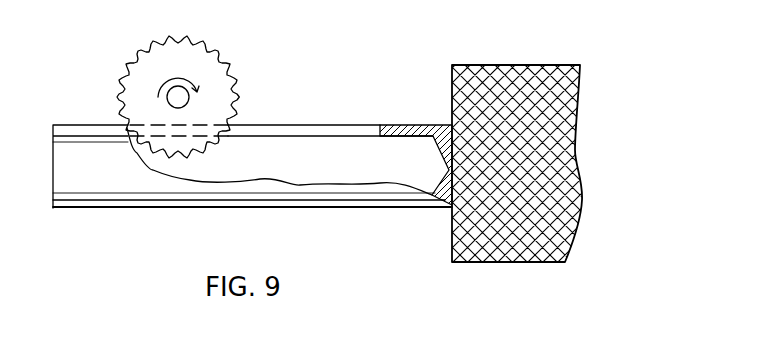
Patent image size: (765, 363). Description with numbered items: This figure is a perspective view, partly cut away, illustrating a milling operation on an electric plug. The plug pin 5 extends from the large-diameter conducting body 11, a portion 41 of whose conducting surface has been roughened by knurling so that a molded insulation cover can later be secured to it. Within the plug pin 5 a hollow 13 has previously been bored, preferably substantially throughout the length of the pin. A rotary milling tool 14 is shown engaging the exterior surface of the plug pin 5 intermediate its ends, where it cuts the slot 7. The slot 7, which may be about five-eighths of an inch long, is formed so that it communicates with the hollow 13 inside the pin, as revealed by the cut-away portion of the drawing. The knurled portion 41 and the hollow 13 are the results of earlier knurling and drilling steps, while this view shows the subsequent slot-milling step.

The milling tool 14 is at (212, 62).
The slot 7 is at (342, 130).
The plug pin 5 is at (347, 208).
The hollow 13 is at (419, 148).
The conducting body 11 is at (537, 65).
The roughened portion 41 is at (557, 112).